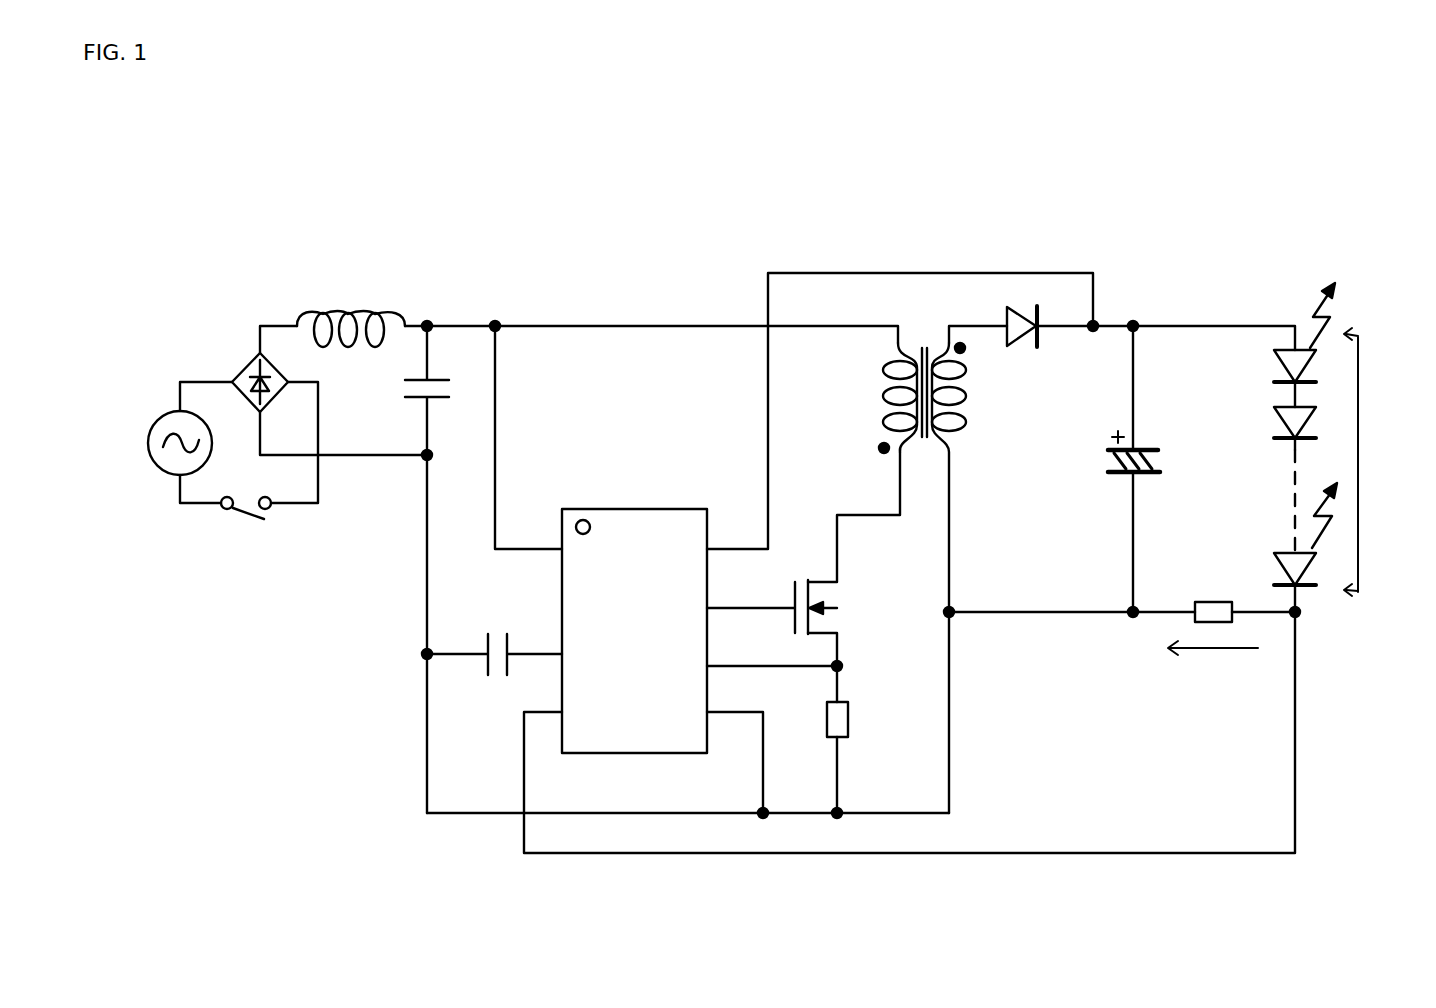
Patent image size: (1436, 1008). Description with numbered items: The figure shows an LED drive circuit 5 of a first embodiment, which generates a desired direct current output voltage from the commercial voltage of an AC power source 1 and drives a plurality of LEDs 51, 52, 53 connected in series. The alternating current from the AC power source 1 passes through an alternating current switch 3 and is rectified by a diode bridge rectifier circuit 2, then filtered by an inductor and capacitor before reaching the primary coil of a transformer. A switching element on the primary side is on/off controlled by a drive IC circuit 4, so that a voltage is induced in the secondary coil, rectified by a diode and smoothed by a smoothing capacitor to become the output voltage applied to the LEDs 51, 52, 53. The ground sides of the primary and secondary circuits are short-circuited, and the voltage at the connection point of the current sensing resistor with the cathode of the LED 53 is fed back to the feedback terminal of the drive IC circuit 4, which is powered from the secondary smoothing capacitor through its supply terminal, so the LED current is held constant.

The AC power source 1 is at (143, 443).
The diode bridge rectifier circuit 2 is at (236, 375).
The alternating current switch 3 is at (253, 520).
The drive IC circuit 4 is at (636, 508).
The LED drive circuit 5 is at (583, 270).
The LED 51 is at (1276, 358).
The LED 52 is at (1276, 415).
The LED 53 is at (1276, 556).